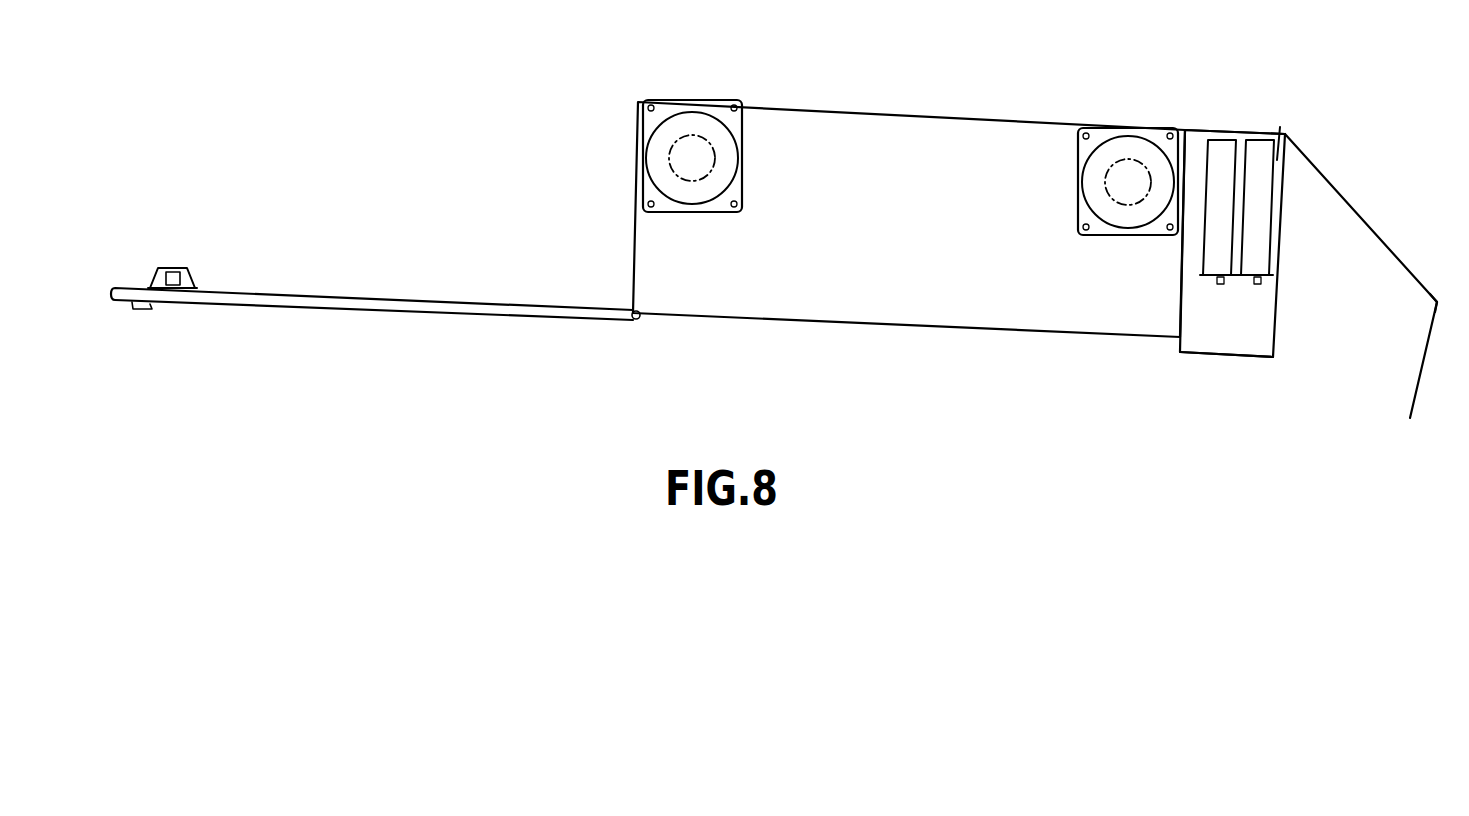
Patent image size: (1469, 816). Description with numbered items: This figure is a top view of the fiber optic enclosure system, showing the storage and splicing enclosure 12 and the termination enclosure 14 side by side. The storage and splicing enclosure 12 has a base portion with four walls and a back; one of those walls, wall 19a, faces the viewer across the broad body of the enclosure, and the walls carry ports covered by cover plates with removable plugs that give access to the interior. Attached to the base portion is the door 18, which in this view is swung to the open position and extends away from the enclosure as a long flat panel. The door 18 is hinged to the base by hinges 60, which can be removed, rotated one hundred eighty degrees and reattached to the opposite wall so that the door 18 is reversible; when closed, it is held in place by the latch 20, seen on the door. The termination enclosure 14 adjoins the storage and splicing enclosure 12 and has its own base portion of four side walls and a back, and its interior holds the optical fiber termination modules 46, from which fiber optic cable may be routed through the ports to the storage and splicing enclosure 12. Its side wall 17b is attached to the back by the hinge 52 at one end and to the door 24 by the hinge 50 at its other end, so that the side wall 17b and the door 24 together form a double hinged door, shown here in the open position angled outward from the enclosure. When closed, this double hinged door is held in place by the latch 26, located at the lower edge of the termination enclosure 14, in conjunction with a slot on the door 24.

The storage and splicing enclosure 12 is at (878, 112).
The termination enclosure 14 is at (1247, 130).
The side wall 17b is at (1373, 228).
The door 18 is at (308, 293).
The wall 19a is at (925, 241).
The latch 20 is at (182, 270).
The door 24 is at (1412, 388).
The latch 26 is at (1195, 360).
The optical fiber termination modules 46 is at (1280, 127).
The hinge 50 is at (1437, 303).
The hinge 52 is at (1285, 134).
The hinges 60 is at (637, 320).